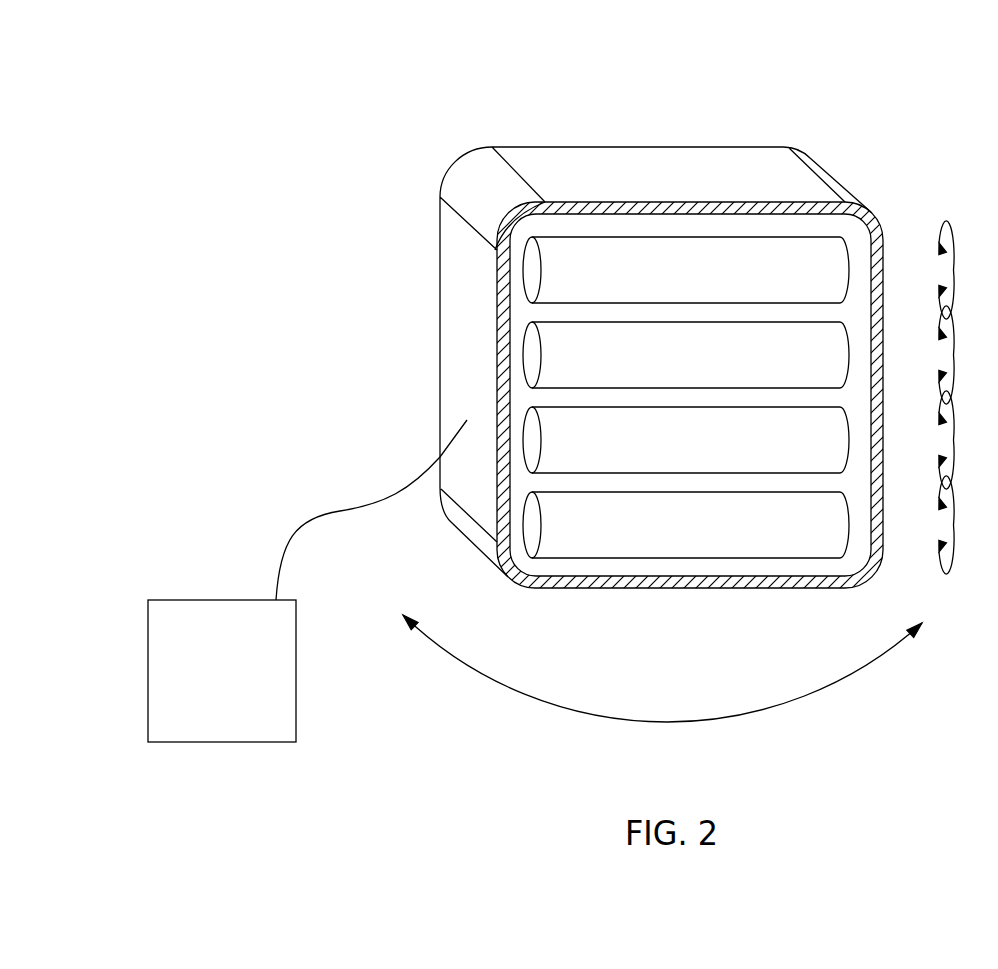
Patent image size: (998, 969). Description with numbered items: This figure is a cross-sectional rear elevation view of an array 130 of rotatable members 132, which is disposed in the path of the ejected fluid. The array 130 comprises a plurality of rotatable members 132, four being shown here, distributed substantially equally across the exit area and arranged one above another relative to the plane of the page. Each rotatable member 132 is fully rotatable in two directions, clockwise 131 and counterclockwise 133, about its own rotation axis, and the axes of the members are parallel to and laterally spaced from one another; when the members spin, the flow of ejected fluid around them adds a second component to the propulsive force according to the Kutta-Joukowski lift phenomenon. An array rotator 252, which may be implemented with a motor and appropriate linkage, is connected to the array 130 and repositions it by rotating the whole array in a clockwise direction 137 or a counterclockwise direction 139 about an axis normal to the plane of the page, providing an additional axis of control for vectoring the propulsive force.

The array 130 is at (408, 117).
The clockwise direction 131 is at (925, 422).
The rotatable member 132 is at (707, 282).
The counterclockwise direction 133 is at (923, 373).
The clockwise direction 137 is at (514, 657).
The counterclockwise direction 139 is at (813, 660).
The array rotator 252 is at (233, 684).